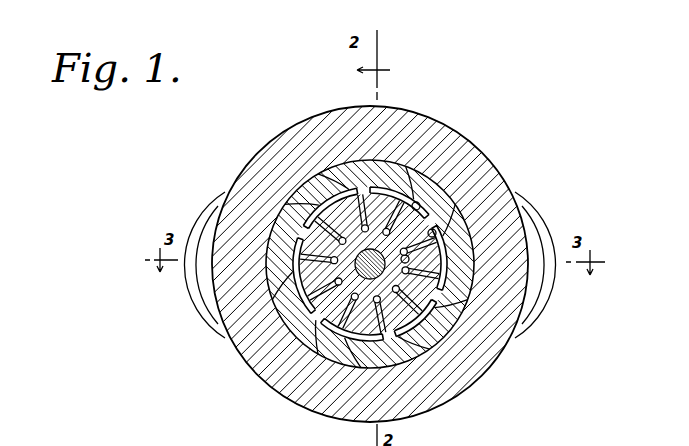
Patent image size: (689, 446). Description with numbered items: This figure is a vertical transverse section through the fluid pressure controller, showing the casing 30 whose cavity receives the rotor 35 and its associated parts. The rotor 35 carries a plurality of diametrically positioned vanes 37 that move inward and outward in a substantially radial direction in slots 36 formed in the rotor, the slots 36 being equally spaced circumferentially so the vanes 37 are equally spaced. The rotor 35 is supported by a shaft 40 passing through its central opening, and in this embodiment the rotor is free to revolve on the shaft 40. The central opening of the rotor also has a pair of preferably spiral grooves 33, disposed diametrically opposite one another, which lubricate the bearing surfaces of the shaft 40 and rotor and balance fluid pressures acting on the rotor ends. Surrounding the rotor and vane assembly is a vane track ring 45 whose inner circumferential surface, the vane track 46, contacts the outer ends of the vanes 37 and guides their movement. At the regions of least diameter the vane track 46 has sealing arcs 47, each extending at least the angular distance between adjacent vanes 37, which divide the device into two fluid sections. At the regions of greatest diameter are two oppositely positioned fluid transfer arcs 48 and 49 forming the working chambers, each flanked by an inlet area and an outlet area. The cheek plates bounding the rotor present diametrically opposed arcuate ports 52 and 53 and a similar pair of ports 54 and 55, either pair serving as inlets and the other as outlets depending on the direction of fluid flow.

The casing 30 is at (452, 134).
The grooves 33 is at (406, 288).
The rotor 35 is at (470, 205).
The slots 36 is at (413, 258).
The vanes 37 is at (375, 350).
The shaft 40 is at (370, 264).
The vane track ring 45 is at (352, 170).
The vane track 46 is at (310, 200).
The sealing arc 47 is at (423, 337).
The fluid transfer arc 48 is at (415, 200).
The fluid transfer arc 49 is at (318, 345).
The arcuate port 52 is at (400, 135).
The arcuate port 53 is at (403, 345).
The arcuate port 54 is at (445, 258).
The arcuate port 55 is at (300, 290).